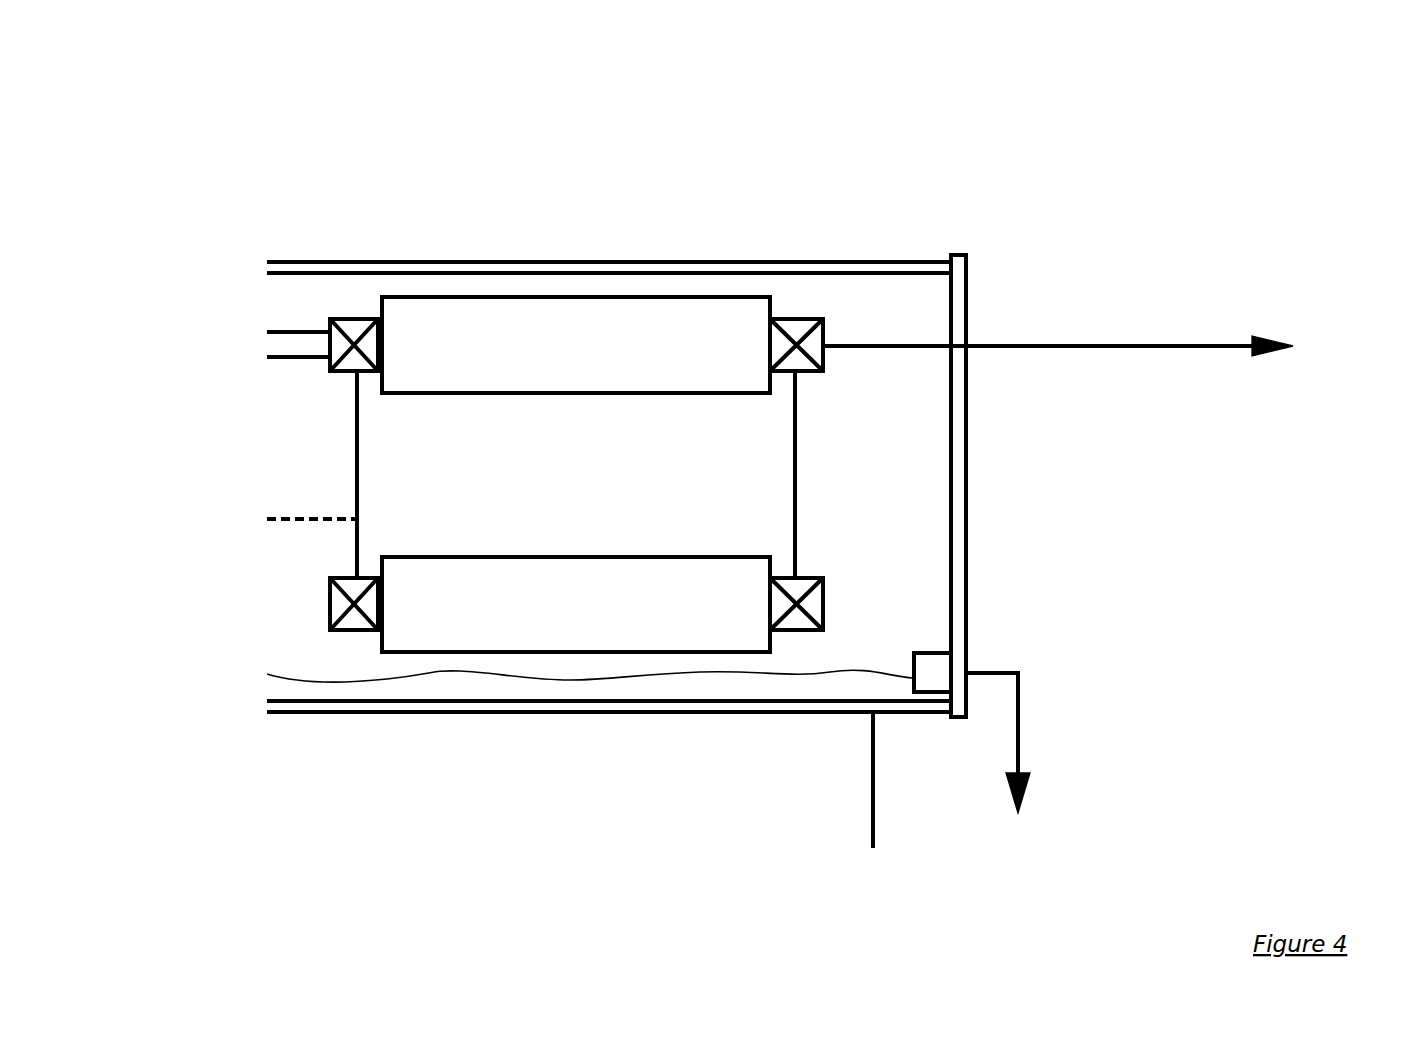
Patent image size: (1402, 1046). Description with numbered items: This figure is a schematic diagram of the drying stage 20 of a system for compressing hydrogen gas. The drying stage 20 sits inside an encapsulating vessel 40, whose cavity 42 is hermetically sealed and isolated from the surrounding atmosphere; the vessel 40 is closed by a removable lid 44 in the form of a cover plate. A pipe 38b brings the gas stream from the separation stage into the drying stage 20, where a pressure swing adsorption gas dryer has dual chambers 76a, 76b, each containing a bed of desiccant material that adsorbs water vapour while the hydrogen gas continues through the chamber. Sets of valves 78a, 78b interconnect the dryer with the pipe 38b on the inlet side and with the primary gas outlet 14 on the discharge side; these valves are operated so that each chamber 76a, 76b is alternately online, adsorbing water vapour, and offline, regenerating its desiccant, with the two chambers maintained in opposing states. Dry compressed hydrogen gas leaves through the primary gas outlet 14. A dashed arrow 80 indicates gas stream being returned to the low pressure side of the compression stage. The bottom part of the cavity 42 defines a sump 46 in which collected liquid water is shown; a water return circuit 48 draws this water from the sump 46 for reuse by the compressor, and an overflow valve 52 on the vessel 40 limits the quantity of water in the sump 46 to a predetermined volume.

The primary gas outlet 14 is at (1175, 345).
The drying stage 20 is at (1105, 177).
The pipe 38b is at (268, 328).
The encapsulating vessel 40 is at (302, 262).
The cavity 42 is at (310, 395).
The removable lid 44 is at (958, 507).
The sump 46 is at (275, 687).
The water return circuit 48 is at (1017, 734).
The overflow valve 52 is at (928, 662).
The chamber 76a is at (545, 323).
The chamber 76b is at (466, 623).
The set of valves 78a is at (345, 303).
The set of valves 78b is at (791, 306).
The dashed arrow 80 is at (278, 517).